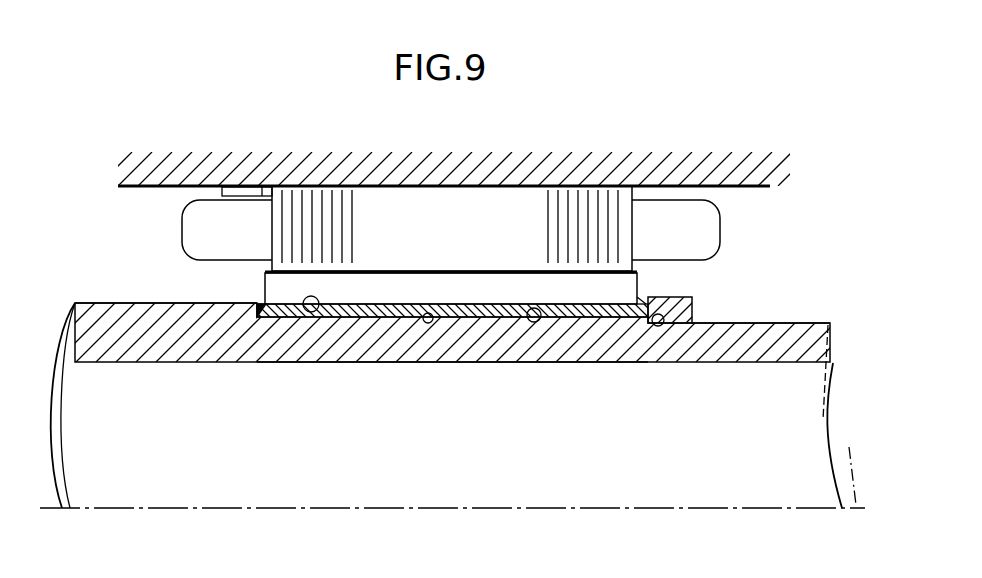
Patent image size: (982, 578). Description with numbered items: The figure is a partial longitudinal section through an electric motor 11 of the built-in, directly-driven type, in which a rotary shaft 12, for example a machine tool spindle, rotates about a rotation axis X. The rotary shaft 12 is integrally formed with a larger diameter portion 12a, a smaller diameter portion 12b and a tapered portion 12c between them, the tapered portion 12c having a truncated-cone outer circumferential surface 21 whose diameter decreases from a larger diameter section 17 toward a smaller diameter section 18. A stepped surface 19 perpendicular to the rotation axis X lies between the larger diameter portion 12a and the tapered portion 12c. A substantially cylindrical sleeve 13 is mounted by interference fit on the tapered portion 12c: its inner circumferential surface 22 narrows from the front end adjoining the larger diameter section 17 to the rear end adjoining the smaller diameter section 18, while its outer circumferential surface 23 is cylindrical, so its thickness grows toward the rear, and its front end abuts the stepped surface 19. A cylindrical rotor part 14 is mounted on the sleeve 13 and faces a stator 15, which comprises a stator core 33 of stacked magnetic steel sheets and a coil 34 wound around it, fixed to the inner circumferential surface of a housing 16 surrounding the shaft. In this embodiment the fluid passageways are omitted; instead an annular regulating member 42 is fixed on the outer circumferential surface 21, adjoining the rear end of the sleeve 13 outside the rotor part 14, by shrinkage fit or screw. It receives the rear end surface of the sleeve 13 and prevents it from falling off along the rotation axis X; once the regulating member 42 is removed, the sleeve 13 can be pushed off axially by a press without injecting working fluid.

The electric motor 11 is at (75, 214).
The rotary shaft 12 is at (75, 296).
The larger diameter portion 12a is at (126, 302).
The smaller diameter portion 12b is at (828, 323).
The tapered portion 12c is at (454, 363).
The sleeve 13 is at (384, 326).
The rotor part 14 is at (502, 265).
The stator 15 is at (174, 228).
The housing 16 is at (753, 188).
The larger diameter section 17 is at (259, 316).
The smaller diameter section 18 is at (658, 327).
The stepped surface 19 is at (262, 297).
The outer circumferential surface of the tapered portion 21 is at (532, 322).
The inner circumferential surface of the sleeve 22 is at (420, 316).
The outer circumferential surface of the sleeve 23 is at (309, 312).
The stator core 33 is at (262, 187).
The coil 34 is at (225, 187).
The regulating member 42 is at (692, 311).
The rotation axis X is at (850, 463).